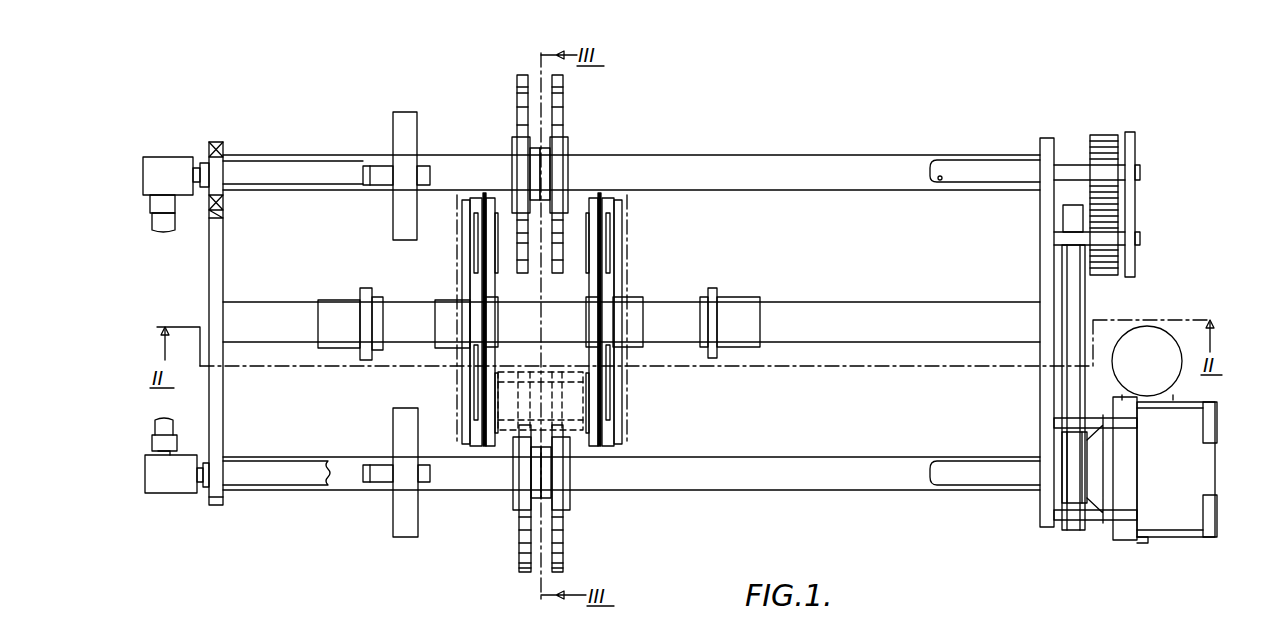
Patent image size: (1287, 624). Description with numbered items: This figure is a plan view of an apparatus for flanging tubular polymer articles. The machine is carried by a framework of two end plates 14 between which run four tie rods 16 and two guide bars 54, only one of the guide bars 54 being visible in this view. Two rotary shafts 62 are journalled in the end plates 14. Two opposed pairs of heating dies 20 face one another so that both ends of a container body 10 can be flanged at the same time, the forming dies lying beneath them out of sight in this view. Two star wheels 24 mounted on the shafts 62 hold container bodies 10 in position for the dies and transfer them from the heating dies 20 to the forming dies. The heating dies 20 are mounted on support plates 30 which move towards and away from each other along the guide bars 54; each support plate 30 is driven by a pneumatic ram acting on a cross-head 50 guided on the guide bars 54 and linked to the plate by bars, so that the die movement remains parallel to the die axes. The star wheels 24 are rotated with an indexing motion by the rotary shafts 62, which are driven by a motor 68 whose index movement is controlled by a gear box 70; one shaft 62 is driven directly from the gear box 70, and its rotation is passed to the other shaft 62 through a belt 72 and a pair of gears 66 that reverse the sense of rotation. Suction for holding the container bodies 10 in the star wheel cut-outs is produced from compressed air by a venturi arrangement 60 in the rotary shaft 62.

The container body 10 is at (566, 430).
The end plate 14 is at (216, 506).
The tie rod 16 is at (990, 162).
The heating die 20 is at (498, 213).
The star wheel 24 is at (550, 75).
The support plate 30 is at (470, 370).
The cross-head 50 is at (714, 289).
The guide bar 54 is at (828, 302).
The venturi arrangement 60 is at (403, 112).
The rotary shaft 62 is at (840, 156).
The gear 66 is at (1118, 198).
The motor 68 is at (1175, 371).
The gear box 70 is at (1206, 465).
The belt 72 is at (1080, 298).